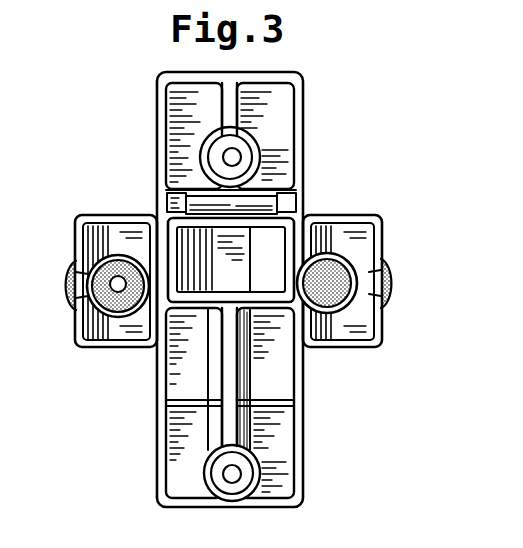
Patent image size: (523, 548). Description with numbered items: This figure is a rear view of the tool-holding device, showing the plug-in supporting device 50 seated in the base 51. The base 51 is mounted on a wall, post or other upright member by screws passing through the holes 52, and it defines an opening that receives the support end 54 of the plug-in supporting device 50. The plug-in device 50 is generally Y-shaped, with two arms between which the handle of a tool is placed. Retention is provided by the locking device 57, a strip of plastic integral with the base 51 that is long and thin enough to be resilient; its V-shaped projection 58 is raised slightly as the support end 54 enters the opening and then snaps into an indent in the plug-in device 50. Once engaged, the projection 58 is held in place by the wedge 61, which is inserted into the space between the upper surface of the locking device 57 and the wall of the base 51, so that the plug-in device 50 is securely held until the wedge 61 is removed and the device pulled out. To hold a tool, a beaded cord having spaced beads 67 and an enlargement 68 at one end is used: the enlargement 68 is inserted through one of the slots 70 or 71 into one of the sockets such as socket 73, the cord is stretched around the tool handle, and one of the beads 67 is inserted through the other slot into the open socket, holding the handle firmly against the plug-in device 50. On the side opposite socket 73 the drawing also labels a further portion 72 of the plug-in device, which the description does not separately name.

The plug-in supporting device 50 is at (346, 348).
The base 51 is at (148, 428).
The holes 52 is at (240, 152).
The support end 54 is at (300, 222).
The locking device 57 is at (218, 192).
The V-shaped projection 58 is at (243, 218).
The wedge 61 is at (192, 197).
The beads 67 is at (98, 304).
The enlargement 68 is at (342, 272).
The slot 70 is at (86, 287).
The slot 71 is at (394, 283).
The left socket arm 72 is at (108, 270).
The socket 73 is at (345, 300).